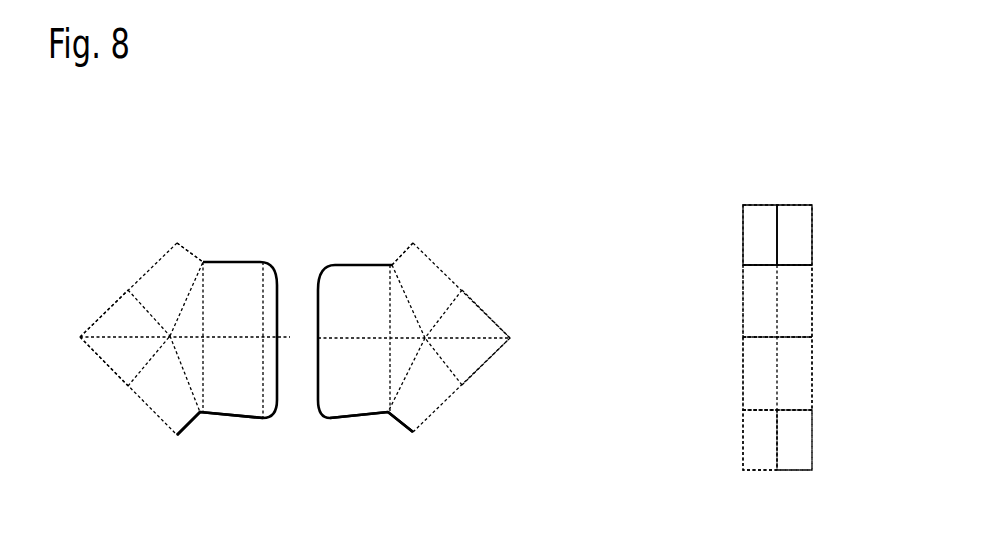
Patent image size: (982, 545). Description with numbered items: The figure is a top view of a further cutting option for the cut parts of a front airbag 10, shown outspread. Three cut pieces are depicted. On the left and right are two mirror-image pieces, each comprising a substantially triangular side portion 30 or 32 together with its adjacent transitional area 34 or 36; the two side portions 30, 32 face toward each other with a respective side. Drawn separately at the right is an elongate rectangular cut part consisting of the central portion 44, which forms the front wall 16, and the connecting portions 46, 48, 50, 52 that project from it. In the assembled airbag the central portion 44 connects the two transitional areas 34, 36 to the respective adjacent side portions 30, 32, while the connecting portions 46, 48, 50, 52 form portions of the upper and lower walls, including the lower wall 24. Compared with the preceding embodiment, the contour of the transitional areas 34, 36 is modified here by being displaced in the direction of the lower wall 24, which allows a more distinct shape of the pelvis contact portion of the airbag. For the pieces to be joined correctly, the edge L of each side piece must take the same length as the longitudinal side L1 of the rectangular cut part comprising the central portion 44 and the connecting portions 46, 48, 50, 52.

The front airbag 10 is at (117, 193).
The front wall 16 is at (805, 335).
The lower wall 24 is at (177, 435).
The side portion 30 is at (110, 327).
The side portion 32 is at (468, 318).
The transitional area 34 is at (190, 272).
The transitional area 36 is at (355, 278).
The central portion 44 is at (767, 382).
The connecting portion 46 is at (755, 222).
The connecting portion 48 is at (798, 222).
The connecting portion 50 is at (758, 445).
The connecting portion 52 is at (788, 445).
The edge L is at (263, 418).
The longitudinal side L1 is at (798, 293).